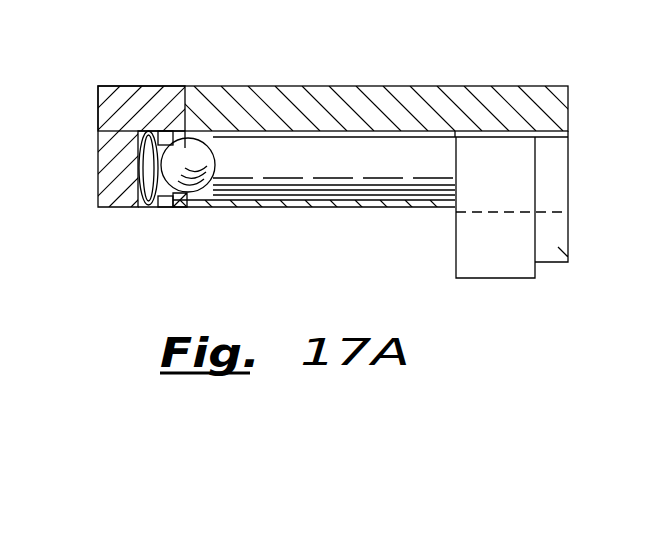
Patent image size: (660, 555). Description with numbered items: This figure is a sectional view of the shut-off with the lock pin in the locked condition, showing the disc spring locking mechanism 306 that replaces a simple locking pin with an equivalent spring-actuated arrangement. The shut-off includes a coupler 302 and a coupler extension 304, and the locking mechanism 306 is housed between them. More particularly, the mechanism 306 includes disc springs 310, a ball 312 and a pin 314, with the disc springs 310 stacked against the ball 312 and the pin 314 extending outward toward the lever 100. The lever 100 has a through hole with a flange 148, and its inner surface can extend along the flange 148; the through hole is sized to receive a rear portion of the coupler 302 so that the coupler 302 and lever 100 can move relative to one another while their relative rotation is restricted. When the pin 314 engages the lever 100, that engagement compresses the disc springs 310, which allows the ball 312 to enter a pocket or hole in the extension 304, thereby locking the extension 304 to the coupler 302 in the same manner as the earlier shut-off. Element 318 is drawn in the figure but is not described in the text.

The lever 100 is at (514, 291).
The flange 148 is at (575, 259).
The coupler 302 is at (372, 78).
The coupler extension 304 is at (98, 115).
The disc spring locking mechanism 306 is at (374, 215).
The disc springs 310 is at (135, 178).
The ball 312 is at (190, 187).
The pin 314 is at (302, 190).
The lens 318 is at (166, 138).